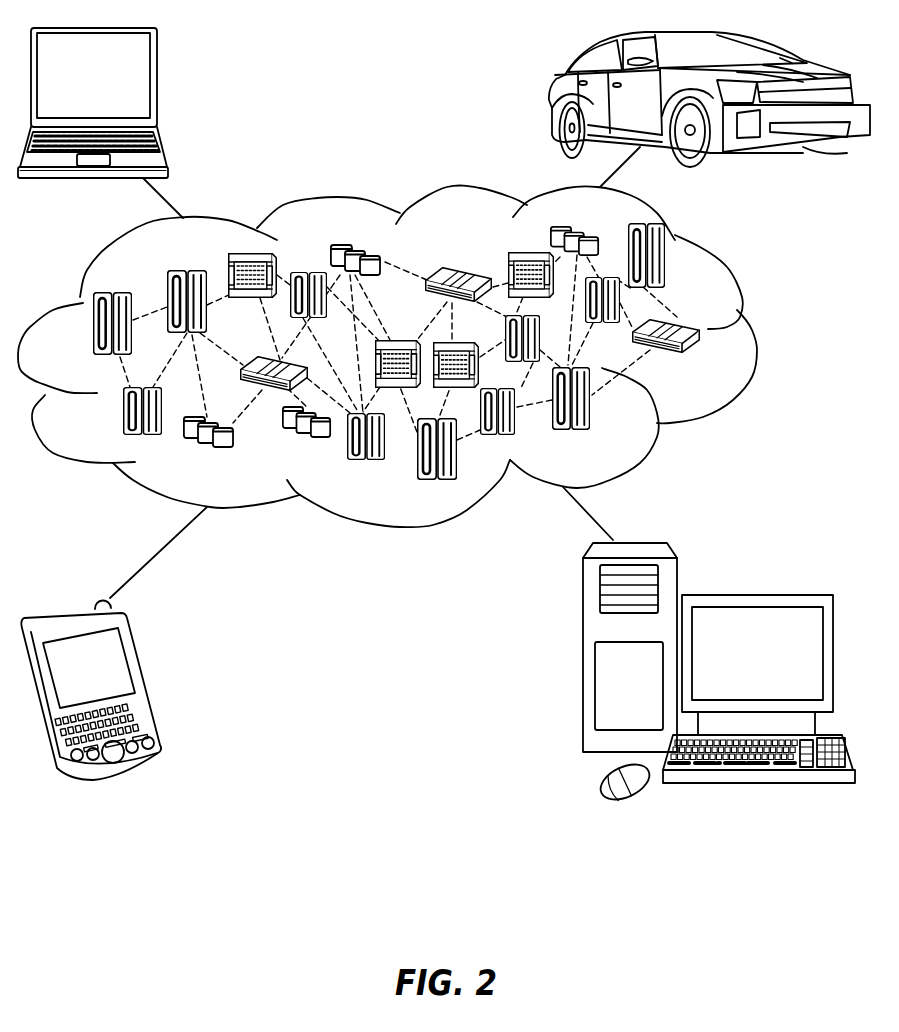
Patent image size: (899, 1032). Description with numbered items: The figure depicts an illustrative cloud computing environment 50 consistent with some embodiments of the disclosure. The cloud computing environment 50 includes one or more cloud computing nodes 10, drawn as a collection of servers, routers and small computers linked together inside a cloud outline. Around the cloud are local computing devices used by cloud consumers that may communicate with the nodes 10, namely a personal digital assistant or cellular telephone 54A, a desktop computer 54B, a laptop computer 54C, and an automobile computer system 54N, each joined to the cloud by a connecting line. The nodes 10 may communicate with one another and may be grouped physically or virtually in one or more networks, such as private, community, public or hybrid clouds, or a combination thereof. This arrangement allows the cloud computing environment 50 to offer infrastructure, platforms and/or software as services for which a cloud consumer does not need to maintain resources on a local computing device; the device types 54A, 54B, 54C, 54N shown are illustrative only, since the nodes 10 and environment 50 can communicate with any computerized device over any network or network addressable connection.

The cloud computing nodes 10 is at (700, 362).
The cloud computing environment 50 is at (757, 335).
The personal digital assistant (PDA) or cellular telephone 54A is at (142, 680).
The desktop computer 54B is at (755, 595).
The laptop computer 54C is at (158, 84).
The automobile computer system 54N is at (553, 100).